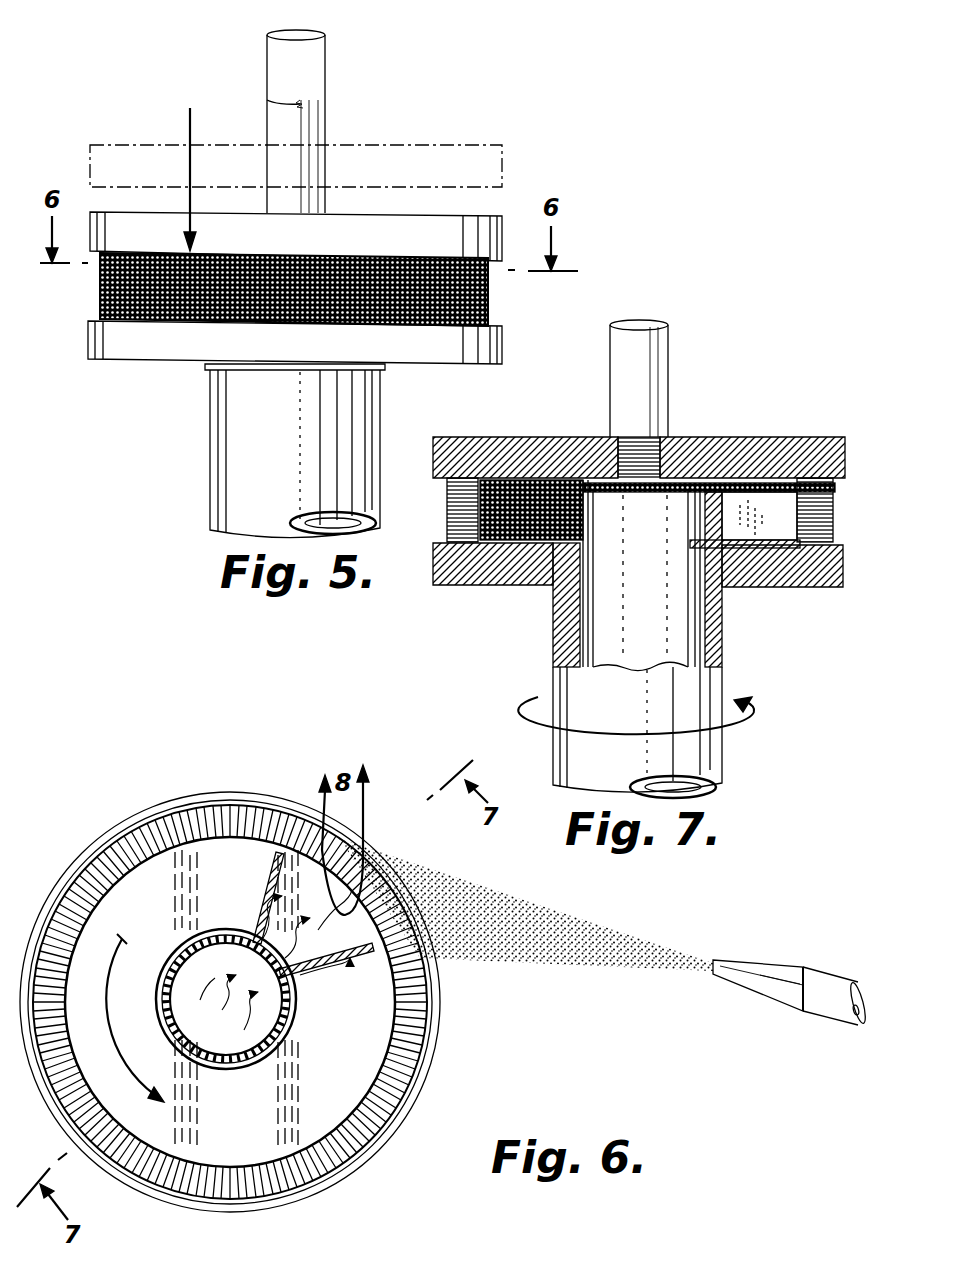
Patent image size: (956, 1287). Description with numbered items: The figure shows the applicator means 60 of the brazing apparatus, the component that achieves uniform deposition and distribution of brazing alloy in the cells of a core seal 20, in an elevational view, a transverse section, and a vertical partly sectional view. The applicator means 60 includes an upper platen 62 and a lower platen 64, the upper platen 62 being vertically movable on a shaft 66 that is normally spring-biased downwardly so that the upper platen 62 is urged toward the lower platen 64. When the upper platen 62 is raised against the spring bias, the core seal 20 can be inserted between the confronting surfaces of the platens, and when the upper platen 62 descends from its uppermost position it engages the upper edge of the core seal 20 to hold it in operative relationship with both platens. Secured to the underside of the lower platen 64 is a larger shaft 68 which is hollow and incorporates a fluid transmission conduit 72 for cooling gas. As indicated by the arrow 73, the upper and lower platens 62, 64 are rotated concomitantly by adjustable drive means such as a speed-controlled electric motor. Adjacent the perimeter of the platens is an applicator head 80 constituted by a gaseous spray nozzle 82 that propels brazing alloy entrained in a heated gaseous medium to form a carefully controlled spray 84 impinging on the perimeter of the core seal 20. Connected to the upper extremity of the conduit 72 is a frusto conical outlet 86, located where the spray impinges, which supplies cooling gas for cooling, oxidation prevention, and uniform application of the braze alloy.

In FIG. 5, the core seal 20 is at (489, 303).
In FIG. 7, the core seal 20 is at (447, 512).
In FIG. 6, the core seal 20 is at (428, 1000).
In FIG. 5, the applicator means 60 is at (168, 396).
In FIG. 7, the applicator means 60 is at (539, 612).
In FIG. 6, the applicator means 60 is at (240, 794).
In FIG. 5, the upper platen 62 is at (487, 181).
In FIG. 7, the upper platen 62 is at (750, 447).
In FIG. 5, the lower platen 64 is at (175, 343).
In FIG. 7, the lower platen 64 is at (484, 585).
In FIG. 6, the lower platen 64 is at (122, 830).
In FIG. 5, the shaft 66 is at (327, 98).
In FIG. 7, the shaft 66 is at (670, 372).
In FIG. 5, the larger shaft 68 is at (220, 428).
In FIG. 7, the larger shaft 68 is at (722, 763).
In FIG. 7, the fluid transmission conduit 72 is at (628, 614).
In FIG. 6, the fluid transmission conduit 72 is at (197, 1038).
In FIG. 6, the arrow 73 is at (126, 939).
In FIG. 6, the applicator head 80 is at (796, 1003).
In FIG. 6, the gaseous spray nozzle 82 is at (735, 963).
In FIG. 6, the spray 84 is at (593, 923).
In FIG. 7, the frusto conical outlet 86 is at (737, 587).
In FIG. 6, the frusto conical outlet 86 is at (368, 962).